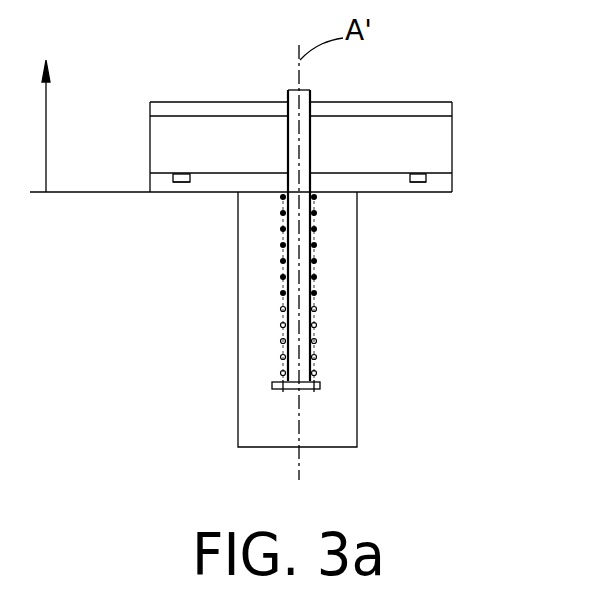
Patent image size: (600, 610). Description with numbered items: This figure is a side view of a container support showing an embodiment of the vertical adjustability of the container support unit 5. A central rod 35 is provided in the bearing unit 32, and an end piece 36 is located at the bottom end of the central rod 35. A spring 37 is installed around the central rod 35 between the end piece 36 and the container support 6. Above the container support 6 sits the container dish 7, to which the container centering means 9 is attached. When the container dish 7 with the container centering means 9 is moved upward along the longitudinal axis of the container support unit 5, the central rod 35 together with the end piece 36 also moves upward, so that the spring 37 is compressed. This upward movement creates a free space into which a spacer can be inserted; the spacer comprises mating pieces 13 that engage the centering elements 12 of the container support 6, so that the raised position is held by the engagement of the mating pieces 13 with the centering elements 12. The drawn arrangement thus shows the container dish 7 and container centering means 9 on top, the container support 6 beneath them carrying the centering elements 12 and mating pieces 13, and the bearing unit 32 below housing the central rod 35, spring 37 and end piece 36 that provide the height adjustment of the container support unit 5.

The container support unit 5 is at (181, 342).
The container support 6 is at (443, 187).
The container dish 7 is at (440, 153).
The container centering means 9 is at (181, 108).
The centering elements 12 is at (179, 184).
The mating pieces 13 is at (187, 176).
The bearing unit 32 is at (253, 413).
The central rod 35 is at (302, 340).
The end piece 36 is at (320, 388).
The spring 37 is at (315, 300).